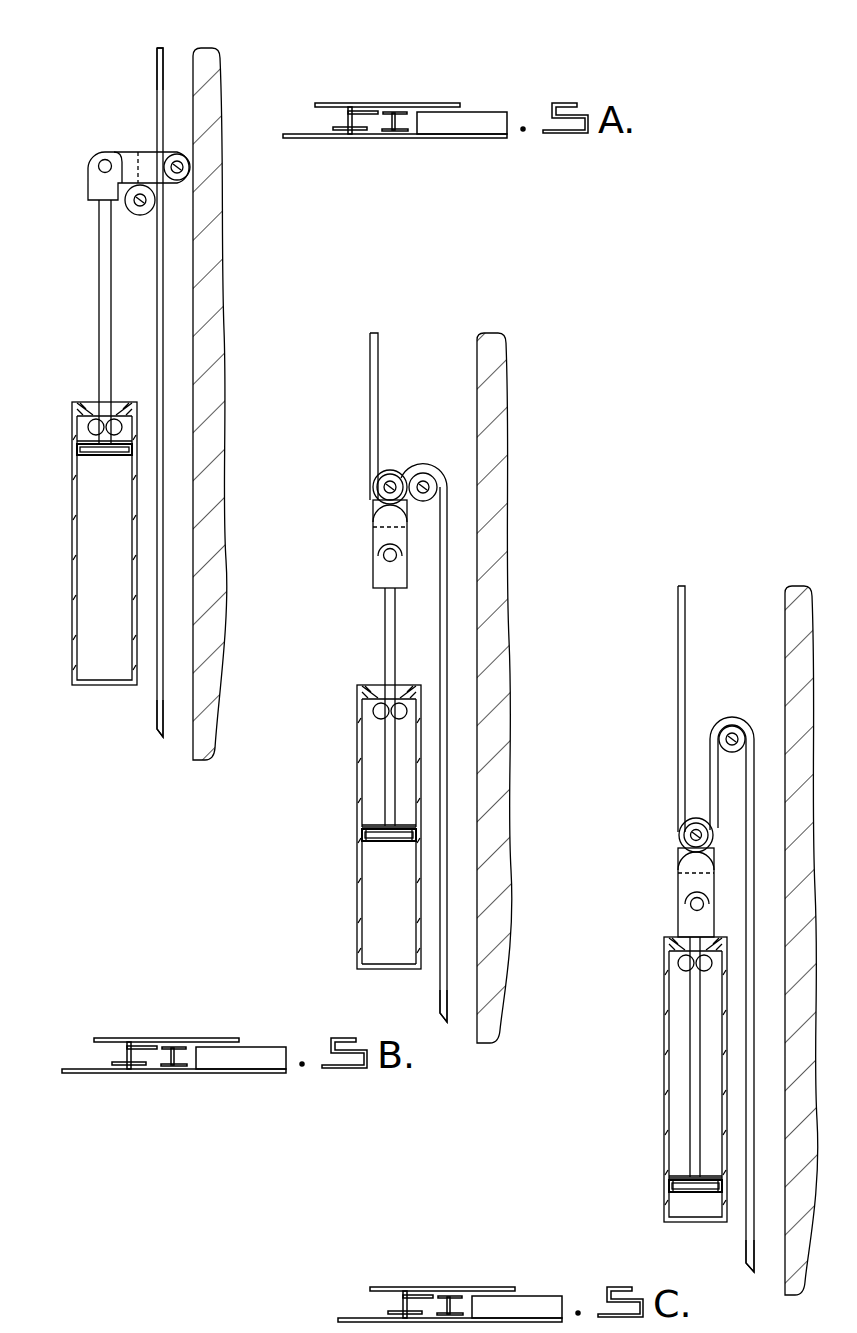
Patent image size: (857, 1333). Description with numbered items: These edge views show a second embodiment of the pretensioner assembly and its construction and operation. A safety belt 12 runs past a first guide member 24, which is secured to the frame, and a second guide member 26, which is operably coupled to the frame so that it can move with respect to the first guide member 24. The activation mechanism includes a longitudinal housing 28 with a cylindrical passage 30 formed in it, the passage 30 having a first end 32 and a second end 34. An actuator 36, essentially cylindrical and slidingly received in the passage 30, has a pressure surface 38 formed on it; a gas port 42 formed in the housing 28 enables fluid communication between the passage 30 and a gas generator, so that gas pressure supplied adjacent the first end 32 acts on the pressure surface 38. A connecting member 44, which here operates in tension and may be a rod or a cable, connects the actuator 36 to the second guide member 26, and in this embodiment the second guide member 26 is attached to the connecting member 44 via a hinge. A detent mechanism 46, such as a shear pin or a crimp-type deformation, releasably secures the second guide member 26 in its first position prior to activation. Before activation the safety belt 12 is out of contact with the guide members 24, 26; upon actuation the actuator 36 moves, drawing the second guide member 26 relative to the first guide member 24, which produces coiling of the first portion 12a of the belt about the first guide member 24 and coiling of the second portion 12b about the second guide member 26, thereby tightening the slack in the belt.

In FIG. 5A, the safety belt 12 is at (158, 60).
In FIG. 5B, the safety belt 12 is at (408, 677).
In FIG. 5C, the safety belt 12 is at (716, 929).
In FIG. 5A, the first portion of safety belt 12a is at (157, 700).
In FIG. 5B, the first portion of safety belt 12a is at (443, 1001).
In FIG. 5C, the first portion of safety belt 12a is at (745, 1242).
In FIG. 5A, the second portion of safety belt 12b is at (164, 86).
In FIG. 5A, the first guide member 24 is at (155, 200).
In FIG. 5B, the first guide member 24 is at (424, 477).
In FIG. 5C, the first guide member 24 is at (728, 728).
In FIG. 5A, the second guide member 26 is at (190, 166).
In FIG. 5B, the second guide member 26 is at (384, 489).
In FIG. 5C, the second guide member 26 is at (687, 835).
In FIG. 5B, the longitudinal housing 28 is at (358, 914).
In FIG. 5B, the cylindrical passage 30 is at (402, 764).
In FIG. 5A, the first end of passage 32 is at (108, 487).
In FIG. 5B, the first end of passage 32 is at (375, 733).
In FIG. 5B, the second end of passage 34 is at (386, 948).
In FIG. 5A, the actuator 36 is at (107, 462).
In FIG. 5B, the actuator 36 is at (387, 850).
In FIG. 5C, the actuator 36 is at (688, 1197).
In FIG. 5A, the pressure surface 38 is at (120, 413).
In FIG. 5B, the pressure surface 38 is at (378, 822).
In FIG. 5C, the pressure surface 38 is at (682, 1177).
In FIG. 5A, the gas port 42 is at (96, 408).
In FIG. 5B, the gas port 42 is at (362, 693).
In FIG. 5C, the gas port 42 is at (685, 966).
In FIG. 5A, the connecting member 44 is at (102, 303).
In FIG. 5B, the connecting member 44 is at (390, 638).
In FIG. 5A, the detent mechanism 46 is at (96, 184).
In FIG. 5B, the detent mechanism 46 is at (382, 580).
In FIG. 5C, the detent mechanism 46 is at (688, 918).